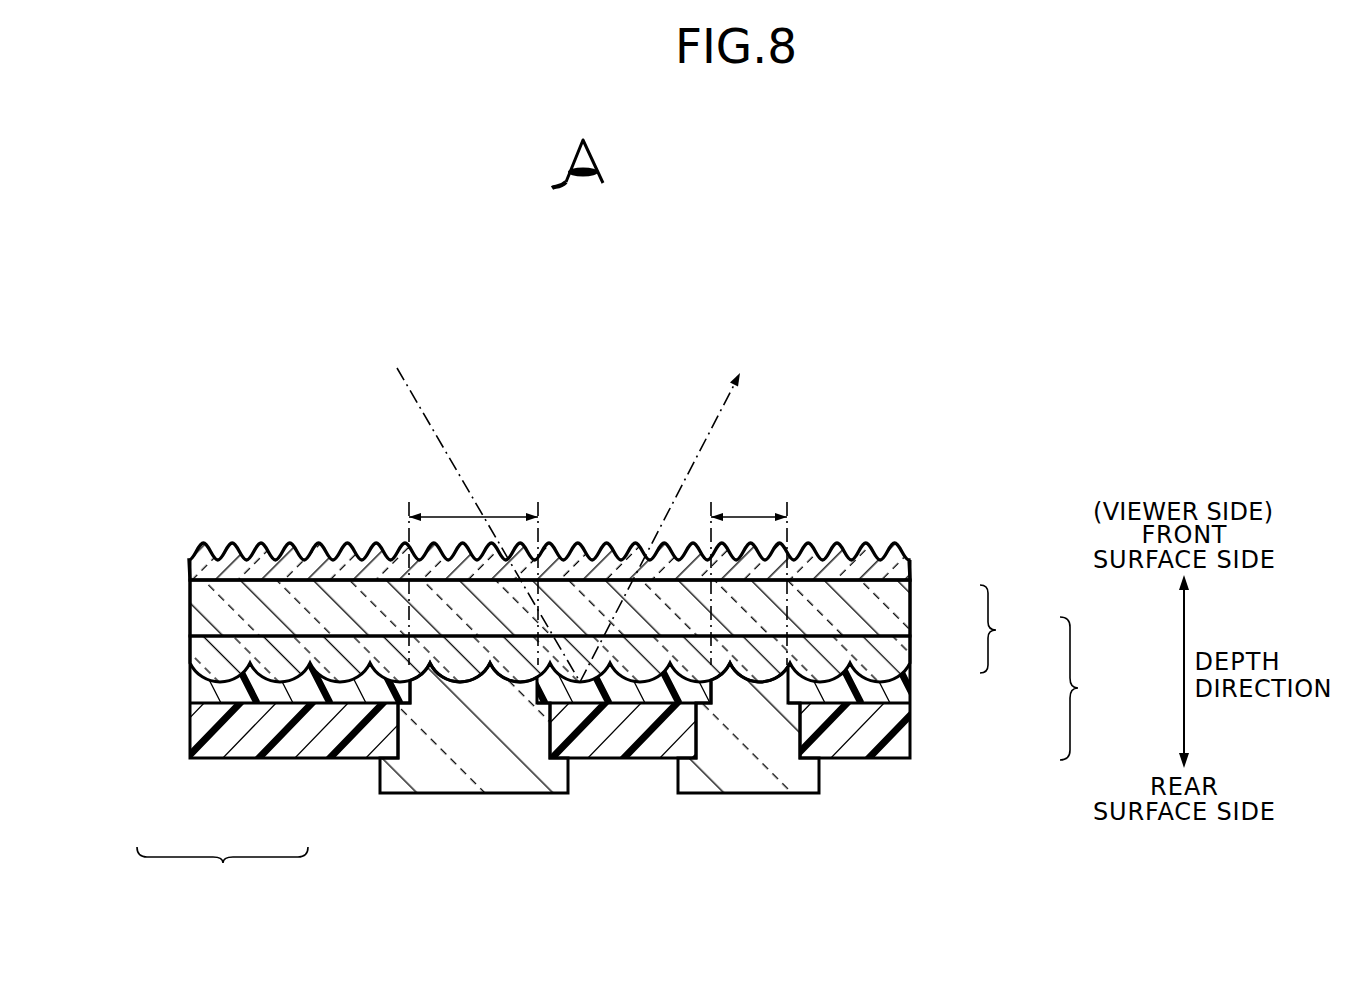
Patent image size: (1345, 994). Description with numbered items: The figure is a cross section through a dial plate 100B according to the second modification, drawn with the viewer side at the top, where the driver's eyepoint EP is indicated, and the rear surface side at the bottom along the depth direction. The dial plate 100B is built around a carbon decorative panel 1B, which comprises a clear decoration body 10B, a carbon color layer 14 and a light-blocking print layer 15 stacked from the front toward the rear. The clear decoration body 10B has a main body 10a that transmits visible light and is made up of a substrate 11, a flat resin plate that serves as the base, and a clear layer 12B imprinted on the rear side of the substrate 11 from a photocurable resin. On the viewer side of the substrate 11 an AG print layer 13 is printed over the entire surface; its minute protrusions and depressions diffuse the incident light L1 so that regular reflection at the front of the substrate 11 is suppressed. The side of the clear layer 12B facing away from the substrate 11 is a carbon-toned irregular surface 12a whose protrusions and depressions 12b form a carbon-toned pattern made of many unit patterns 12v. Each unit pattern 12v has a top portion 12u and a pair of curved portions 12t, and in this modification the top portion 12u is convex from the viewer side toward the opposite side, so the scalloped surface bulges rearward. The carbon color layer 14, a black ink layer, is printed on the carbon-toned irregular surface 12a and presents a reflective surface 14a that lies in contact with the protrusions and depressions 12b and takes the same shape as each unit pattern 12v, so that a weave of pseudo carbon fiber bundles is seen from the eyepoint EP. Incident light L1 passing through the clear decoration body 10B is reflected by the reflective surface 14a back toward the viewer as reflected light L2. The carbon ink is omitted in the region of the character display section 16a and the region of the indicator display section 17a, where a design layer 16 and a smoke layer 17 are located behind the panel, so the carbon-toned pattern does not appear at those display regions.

The dial plate 100B is at (896, 416).
The carbon decorative panel 1B is at (1087, 688).
The clear decoration body 10B is at (1011, 629).
The main body 10a is at (1028, 655).
The substrate 11 is at (912, 603).
The clear layer 12B is at (912, 658).
The carbon-toned irregular surface 12a is at (347, 688).
The protrusions and depressions 12b is at (360, 908).
The curved portions 12t is at (190, 686).
The top portion 12u is at (218, 687).
The unit pattern 12v is at (222, 871).
The AG print layer 13 is at (912, 556).
The carbon color layer 14 is at (912, 693).
The reflective surface 14a is at (286, 676).
The light-blocking print layer 15 is at (912, 735).
The design layer 16 is at (475, 793).
The character display section 16a is at (497, 515).
The smoke layer 17 is at (753, 793).
The indicator display section 17a is at (747, 515).
The incident light L1 is at (422, 408).
The reflected light L2 is at (720, 408).
The eyepoint EP is at (592, 152).